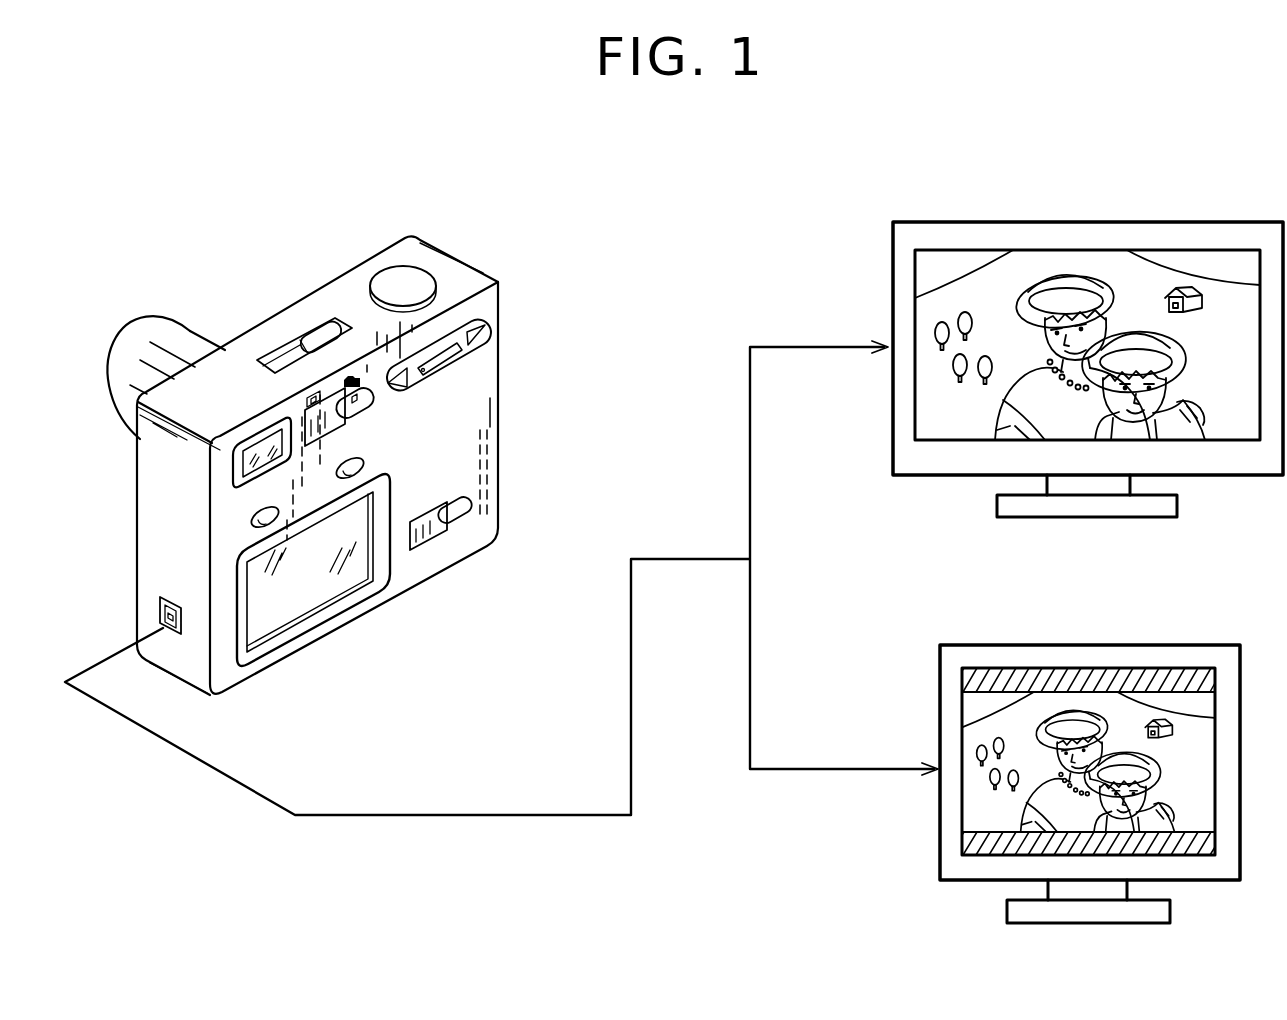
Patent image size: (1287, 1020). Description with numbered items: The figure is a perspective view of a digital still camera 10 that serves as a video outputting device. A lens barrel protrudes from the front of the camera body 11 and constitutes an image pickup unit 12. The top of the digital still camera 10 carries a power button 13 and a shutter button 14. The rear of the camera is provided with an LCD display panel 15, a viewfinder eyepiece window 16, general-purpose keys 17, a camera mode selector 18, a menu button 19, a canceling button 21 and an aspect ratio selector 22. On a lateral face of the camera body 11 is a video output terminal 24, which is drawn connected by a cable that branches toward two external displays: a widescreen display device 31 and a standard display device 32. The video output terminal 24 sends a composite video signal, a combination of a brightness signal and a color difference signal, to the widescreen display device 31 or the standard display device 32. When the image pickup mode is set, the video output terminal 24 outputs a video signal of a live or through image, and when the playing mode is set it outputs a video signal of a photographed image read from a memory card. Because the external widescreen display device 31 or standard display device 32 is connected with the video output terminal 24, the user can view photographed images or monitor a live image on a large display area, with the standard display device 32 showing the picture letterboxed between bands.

The digital still camera 10 is at (332, 228).
The camera body 11 is at (466, 238).
The image pickup unit 12 is at (200, 333).
The power button 13 is at (320, 330).
The shutter button 14 is at (405, 280).
The LCD display panel 15 is at (303, 600).
The viewfinder eyepiece window 16 is at (262, 443).
The general-purpose keys 17 is at (457, 358).
The camera mode selector 18 is at (343, 423).
The menu button 19 is at (263, 517).
The canceling button 21 is at (362, 468).
The aspect ratio selector 22 is at (460, 520).
The video output terminal 24 is at (160, 620).
The widescreen display device 31 is at (1122, 204).
The standard display device 32 is at (1201, 630).